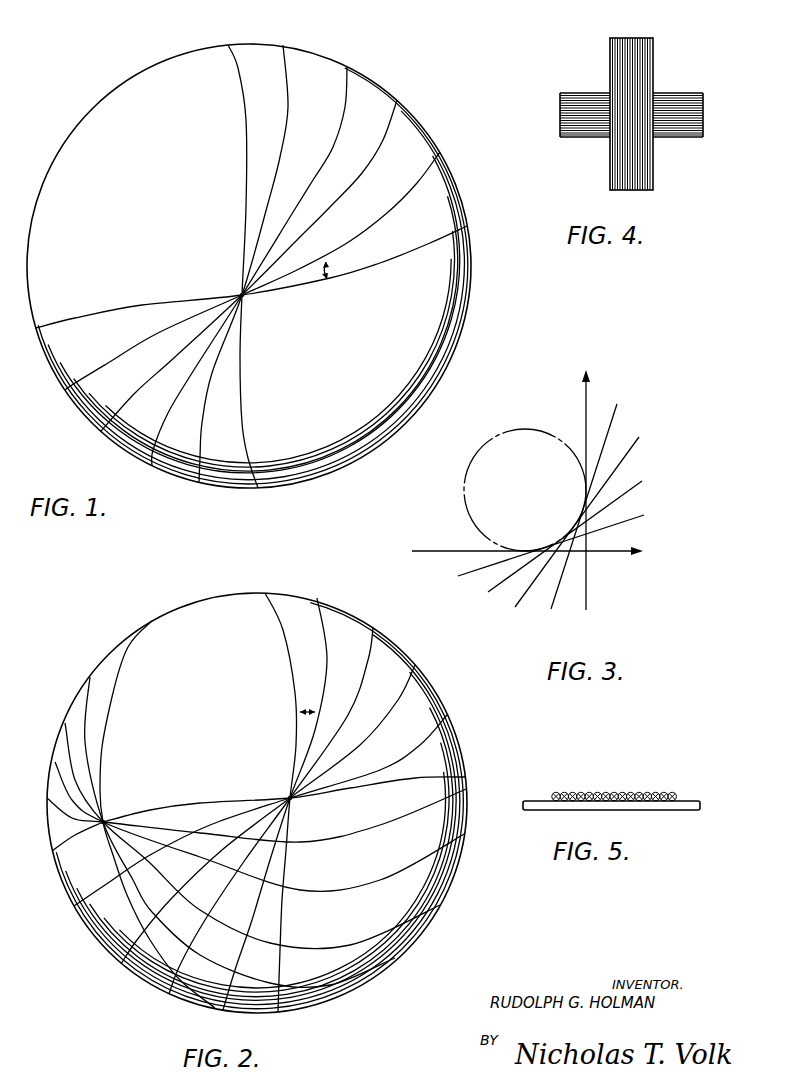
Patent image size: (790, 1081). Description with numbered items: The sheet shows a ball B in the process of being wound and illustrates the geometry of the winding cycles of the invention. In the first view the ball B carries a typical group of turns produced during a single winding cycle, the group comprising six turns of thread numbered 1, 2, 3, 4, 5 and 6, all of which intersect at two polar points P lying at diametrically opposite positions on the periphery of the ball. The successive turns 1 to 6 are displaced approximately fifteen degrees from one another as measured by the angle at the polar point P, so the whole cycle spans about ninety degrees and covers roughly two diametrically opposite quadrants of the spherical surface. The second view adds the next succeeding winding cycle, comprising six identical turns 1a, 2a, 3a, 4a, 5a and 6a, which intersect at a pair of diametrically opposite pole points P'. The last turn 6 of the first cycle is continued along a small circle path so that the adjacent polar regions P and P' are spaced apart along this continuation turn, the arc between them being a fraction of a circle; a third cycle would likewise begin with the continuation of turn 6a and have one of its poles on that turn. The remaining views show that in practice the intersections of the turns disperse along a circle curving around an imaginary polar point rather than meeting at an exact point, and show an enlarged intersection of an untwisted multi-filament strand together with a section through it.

In FIG. 1, the ball B is at (128, 98).
In FIG. 2, the ball B is at (203, 610).
In FIG. 1, the first turn 1 is at (428, 251).
In FIG. 2, the first turn 1 is at (114, 690).
In FIG. 3, the first turn 1 is at (525, 551).
In FIG. 1, the second turn 2 is at (399, 204).
In FIG. 2, the second turn 2 is at (86, 742).
In FIG. 3, the second turn 2 is at (549, 548).
In FIG. 1, the third turn 3 is at (362, 175).
In FIG. 2, the third turn 3 is at (76, 780).
In FIG. 3, the third turn 3 is at (563, 537).
In FIG. 1, the fourth turn 4 is at (333, 147).
In FIG. 2, the fourth turn 4 is at (73, 806).
In FIG. 3, the fourth turn 4 is at (577, 523).
In FIG. 1, the fifth turn 5 is at (287, 118).
In FIG. 2, the fifth turn 5 is at (77, 824).
In FIG. 3, the fifth turn 5 is at (581, 506).
In FIG. 4, the fifth turn 5 is at (525, 115).
In FIG. 1, the sixth turn 6 is at (247, 122).
In FIG. 2, the sixth turn 6 is at (87, 833).
In FIG. 3, the sixth turn 6 is at (585, 495).
In FIG. 2, the first turn of second cycle 1a is at (415, 778).
In FIG. 2, the second turn of second cycle 2a is at (400, 750).
In FIG. 2, the third turn of second cycle 3a is at (385, 713).
In FIG. 2, the fourth turn of second cycle 4a is at (360, 688).
In FIG. 2, the fifth turn of second cycle 5a is at (326, 648).
In FIG. 2, the sixth turn of second cycle 6a is at (295, 692).
In FIG. 1, the polar point P is at (220, 278).
In FIG. 3, the polar point P is at (525, 490).
In FIG. 2, the pole point of second cycle P' is at (196, 794).